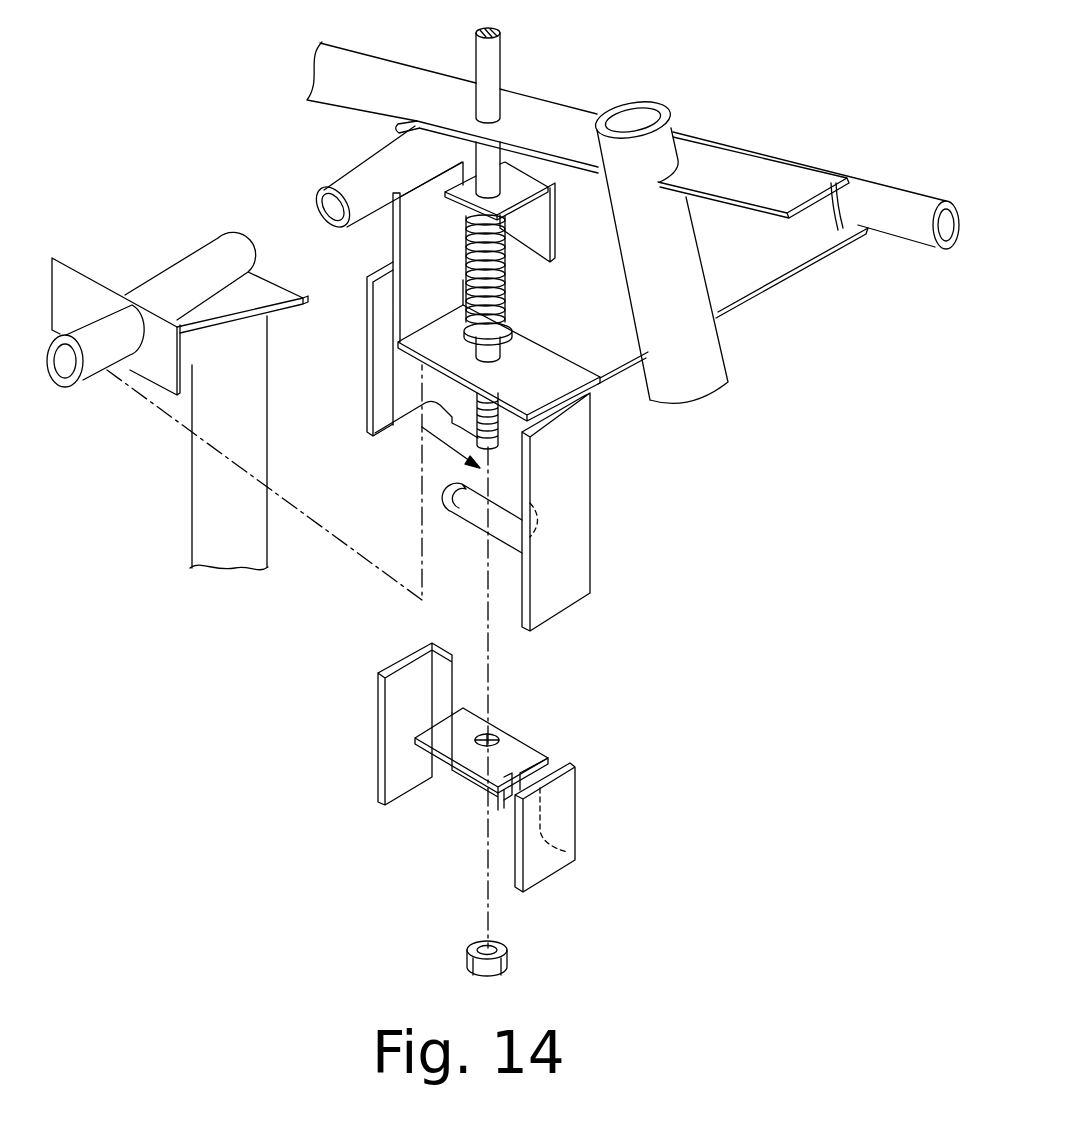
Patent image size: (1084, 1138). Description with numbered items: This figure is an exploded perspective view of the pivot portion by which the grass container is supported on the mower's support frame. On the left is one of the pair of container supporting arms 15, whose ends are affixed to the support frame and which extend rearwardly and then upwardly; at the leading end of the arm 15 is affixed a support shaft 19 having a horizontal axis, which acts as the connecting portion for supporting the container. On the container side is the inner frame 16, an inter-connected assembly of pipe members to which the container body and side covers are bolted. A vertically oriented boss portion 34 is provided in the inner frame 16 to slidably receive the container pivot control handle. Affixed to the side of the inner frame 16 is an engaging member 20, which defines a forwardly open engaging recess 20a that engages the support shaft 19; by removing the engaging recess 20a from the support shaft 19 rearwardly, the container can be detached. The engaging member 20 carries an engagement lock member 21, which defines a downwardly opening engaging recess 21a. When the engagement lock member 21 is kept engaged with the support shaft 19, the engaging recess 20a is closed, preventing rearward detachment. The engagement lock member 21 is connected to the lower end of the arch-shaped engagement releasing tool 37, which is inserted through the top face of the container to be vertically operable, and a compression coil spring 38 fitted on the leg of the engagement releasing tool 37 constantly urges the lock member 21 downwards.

The container supporting arm 15 is at (202, 520).
The inner frame 16 is at (898, 184).
The support shaft 19 is at (76, 386).
The engaging member 20 is at (570, 570).
The engaging recess 20a is at (507, 510).
The engagement lock member 21 is at (527, 748).
The engaging recess 21a is at (505, 802).
The boss portion 34 is at (667, 132).
The engagement releasing tool 37 is at (493, 67).
The compression coil spring 38 is at (507, 283).